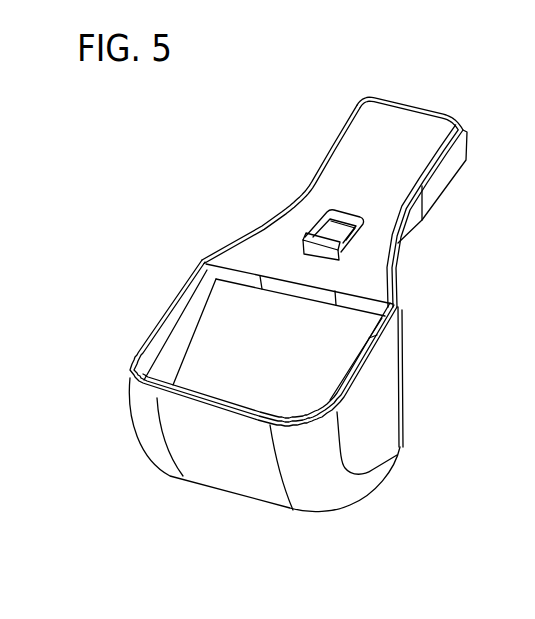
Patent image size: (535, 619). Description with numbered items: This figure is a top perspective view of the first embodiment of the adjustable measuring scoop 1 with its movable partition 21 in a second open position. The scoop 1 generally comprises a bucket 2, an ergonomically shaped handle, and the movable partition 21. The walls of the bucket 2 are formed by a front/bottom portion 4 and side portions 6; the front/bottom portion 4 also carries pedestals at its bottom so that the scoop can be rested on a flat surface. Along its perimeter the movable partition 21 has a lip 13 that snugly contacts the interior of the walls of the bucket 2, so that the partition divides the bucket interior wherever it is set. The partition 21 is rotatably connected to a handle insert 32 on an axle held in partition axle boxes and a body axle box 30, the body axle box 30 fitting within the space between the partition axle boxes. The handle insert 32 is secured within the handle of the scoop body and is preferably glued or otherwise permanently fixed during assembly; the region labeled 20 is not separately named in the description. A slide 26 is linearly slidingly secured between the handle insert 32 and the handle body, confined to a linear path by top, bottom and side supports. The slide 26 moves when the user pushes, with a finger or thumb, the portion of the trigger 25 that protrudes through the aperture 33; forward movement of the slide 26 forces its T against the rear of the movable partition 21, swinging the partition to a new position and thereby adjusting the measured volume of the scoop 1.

The scoop 1 is at (381, 412).
The bucket 2 is at (317, 493).
The front/bottom portion 4 is at (220, 477).
The side portions 6 is at (180, 283).
The lip 13 is at (187, 325).
The handle neck 20 is at (210, 252).
The movable partition 21 is at (243, 343).
The trigger 25 is at (326, 236).
The slide 26 is at (352, 234).
The body axle box 30 is at (200, 294).
The handle insert 32 is at (389, 133).
The aperture 33 is at (318, 227).